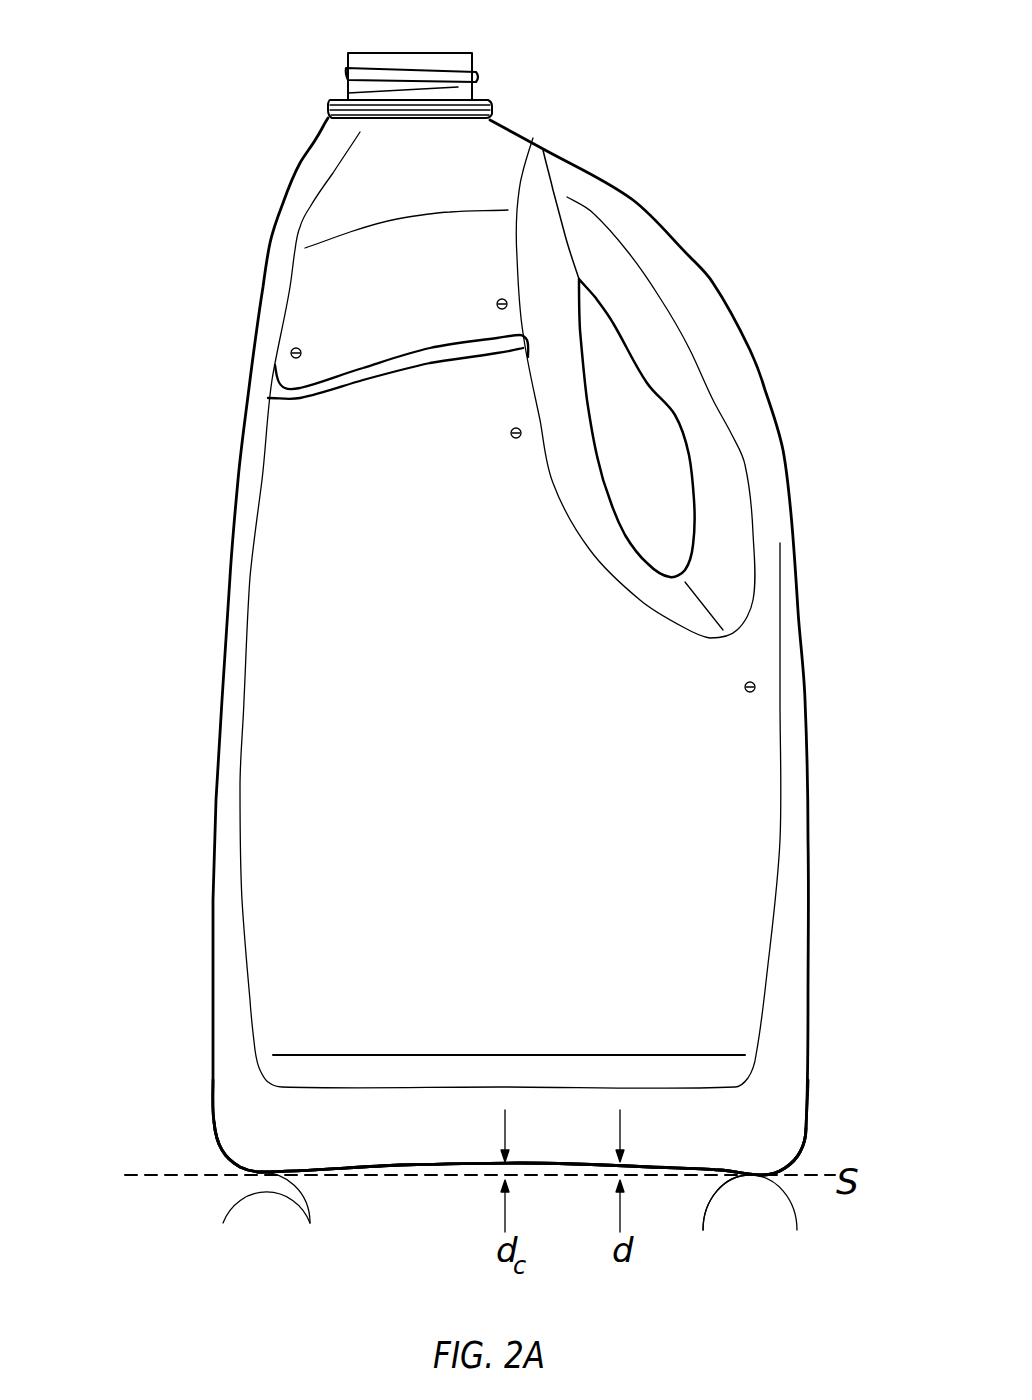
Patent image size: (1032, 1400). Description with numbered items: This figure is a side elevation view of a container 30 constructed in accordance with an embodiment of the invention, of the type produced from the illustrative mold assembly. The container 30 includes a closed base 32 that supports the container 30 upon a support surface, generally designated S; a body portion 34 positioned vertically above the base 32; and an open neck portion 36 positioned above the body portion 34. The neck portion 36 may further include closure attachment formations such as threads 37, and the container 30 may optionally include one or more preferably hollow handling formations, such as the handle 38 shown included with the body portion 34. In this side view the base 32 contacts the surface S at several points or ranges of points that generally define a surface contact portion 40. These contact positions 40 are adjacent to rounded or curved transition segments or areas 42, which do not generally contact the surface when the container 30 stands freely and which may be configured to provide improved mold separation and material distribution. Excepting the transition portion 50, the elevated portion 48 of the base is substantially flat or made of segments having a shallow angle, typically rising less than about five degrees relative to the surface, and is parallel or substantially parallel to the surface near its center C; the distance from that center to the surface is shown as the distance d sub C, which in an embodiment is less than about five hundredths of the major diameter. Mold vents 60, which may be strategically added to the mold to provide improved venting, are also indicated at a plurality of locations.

The container 30 is at (122, 281).
The closed base 32 is at (181, 1084).
The body portion 34 is at (191, 116).
The open neck portion 36 is at (316, 52).
The threads 37 is at (393, 67).
The handle 38 is at (739, 398).
The surface contact portion 40 is at (506, 1222).
The transition segments or areas 42 is at (222, 1162).
The elevated portion 48 is at (427, 1167).
The transition portion 50 is at (503, 1220).
The mold vents 60 is at (295, 347).